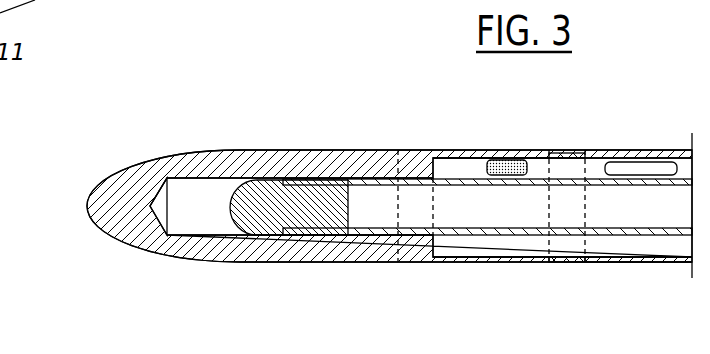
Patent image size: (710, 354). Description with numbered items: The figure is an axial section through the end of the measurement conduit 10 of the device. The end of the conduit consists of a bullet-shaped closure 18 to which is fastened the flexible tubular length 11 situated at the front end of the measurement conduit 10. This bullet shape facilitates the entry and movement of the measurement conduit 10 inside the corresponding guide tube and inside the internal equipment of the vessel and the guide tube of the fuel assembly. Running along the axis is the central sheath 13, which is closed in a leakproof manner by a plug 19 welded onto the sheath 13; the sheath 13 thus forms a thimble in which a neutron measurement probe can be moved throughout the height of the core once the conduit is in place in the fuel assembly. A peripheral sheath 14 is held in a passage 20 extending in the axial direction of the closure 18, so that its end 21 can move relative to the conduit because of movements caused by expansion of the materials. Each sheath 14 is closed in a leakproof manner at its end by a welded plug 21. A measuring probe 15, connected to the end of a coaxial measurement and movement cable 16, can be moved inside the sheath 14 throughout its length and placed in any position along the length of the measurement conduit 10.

The measurement conduit 10 is at (360, 146).
The flexible tubular length 11 is at (627, 259).
The central sheath 13 is at (512, 236).
The peripheral sheath 14 is at (567, 157).
The measuring probe 15 is at (637, 161).
The coaxial measurement and movement cable 16 is at (684, 160).
The bullet-shaped closure 18 is at (129, 190).
The plug 19 is at (305, 196).
The passage 20 is at (447, 162).
The welded plug 21 is at (507, 165).